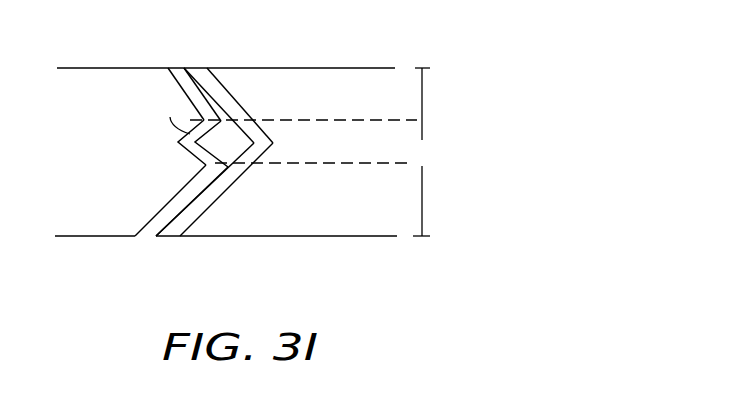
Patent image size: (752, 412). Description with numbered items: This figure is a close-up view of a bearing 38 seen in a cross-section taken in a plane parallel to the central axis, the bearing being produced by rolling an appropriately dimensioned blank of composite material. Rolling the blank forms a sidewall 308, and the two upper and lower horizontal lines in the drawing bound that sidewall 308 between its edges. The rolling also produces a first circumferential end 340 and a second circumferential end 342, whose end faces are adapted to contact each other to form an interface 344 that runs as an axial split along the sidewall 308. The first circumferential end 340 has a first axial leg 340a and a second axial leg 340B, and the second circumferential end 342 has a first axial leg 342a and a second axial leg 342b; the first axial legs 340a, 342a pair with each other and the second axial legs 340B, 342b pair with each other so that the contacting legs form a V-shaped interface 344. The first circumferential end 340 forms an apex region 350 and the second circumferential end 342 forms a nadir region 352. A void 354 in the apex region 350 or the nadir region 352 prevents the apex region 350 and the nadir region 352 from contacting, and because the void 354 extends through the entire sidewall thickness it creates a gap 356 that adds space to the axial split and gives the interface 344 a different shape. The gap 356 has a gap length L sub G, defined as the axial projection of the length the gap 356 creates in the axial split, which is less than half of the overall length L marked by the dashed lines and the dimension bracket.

The bearing 38 is at (372, 44).
The sidewall 308 is at (315, 237).
The first circumferential end 340 is at (171, 67).
The first axial leg 340a is at (169, 73).
The second axial leg 340B is at (172, 198).
The second circumferential end 342 is at (205, 82).
The first axial leg 342a is at (222, 108).
The second axial leg 342b is at (238, 178).
The interface 344 is at (155, 223).
The apex region 350 is at (191, 154).
The nadir region 352 is at (253, 121).
The void 354 is at (192, 138).
The gap 356 is at (221, 168).